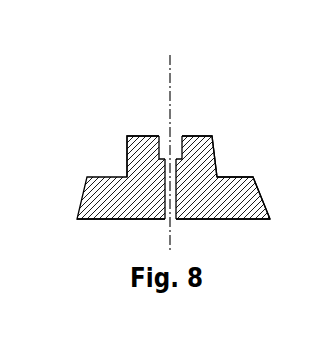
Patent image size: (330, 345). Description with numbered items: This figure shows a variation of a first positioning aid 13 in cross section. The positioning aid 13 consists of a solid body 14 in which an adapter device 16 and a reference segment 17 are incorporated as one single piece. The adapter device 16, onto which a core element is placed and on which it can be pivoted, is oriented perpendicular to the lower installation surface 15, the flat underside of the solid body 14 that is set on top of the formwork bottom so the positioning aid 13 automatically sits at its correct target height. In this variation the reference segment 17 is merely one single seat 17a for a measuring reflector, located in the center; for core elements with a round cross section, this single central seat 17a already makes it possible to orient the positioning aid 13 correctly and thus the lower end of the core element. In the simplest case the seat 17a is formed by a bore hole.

The first positioning aid 13 is at (234, 113).
The solid body 14 is at (249, 188).
The flat installation surface 15 is at (221, 219).
The adapter device 16 is at (132, 159).
The reference segment 17 is at (125, 139).
The seat for a measuring reflector 17a is at (158, 136).